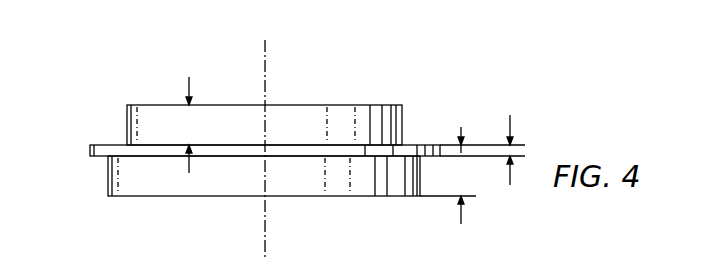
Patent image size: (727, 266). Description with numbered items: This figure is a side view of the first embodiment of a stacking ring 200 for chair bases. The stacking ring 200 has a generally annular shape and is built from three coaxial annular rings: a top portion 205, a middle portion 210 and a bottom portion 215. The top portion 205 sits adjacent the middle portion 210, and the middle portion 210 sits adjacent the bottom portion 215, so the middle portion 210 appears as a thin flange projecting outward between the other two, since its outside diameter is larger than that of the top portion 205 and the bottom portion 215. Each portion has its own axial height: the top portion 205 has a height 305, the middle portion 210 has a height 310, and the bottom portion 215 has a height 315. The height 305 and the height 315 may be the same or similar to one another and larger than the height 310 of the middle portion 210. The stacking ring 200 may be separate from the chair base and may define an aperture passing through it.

The stacking ring 200 is at (261, 109).
The top portion 205 is at (127, 122).
The middle portion 210 is at (90, 151).
The bottom portion 215 is at (108, 178).
The height of the top portion 305 is at (189, 79).
The height of the middle portion 310 is at (510, 117).
The height of the bottom portion 315 is at (461, 221).